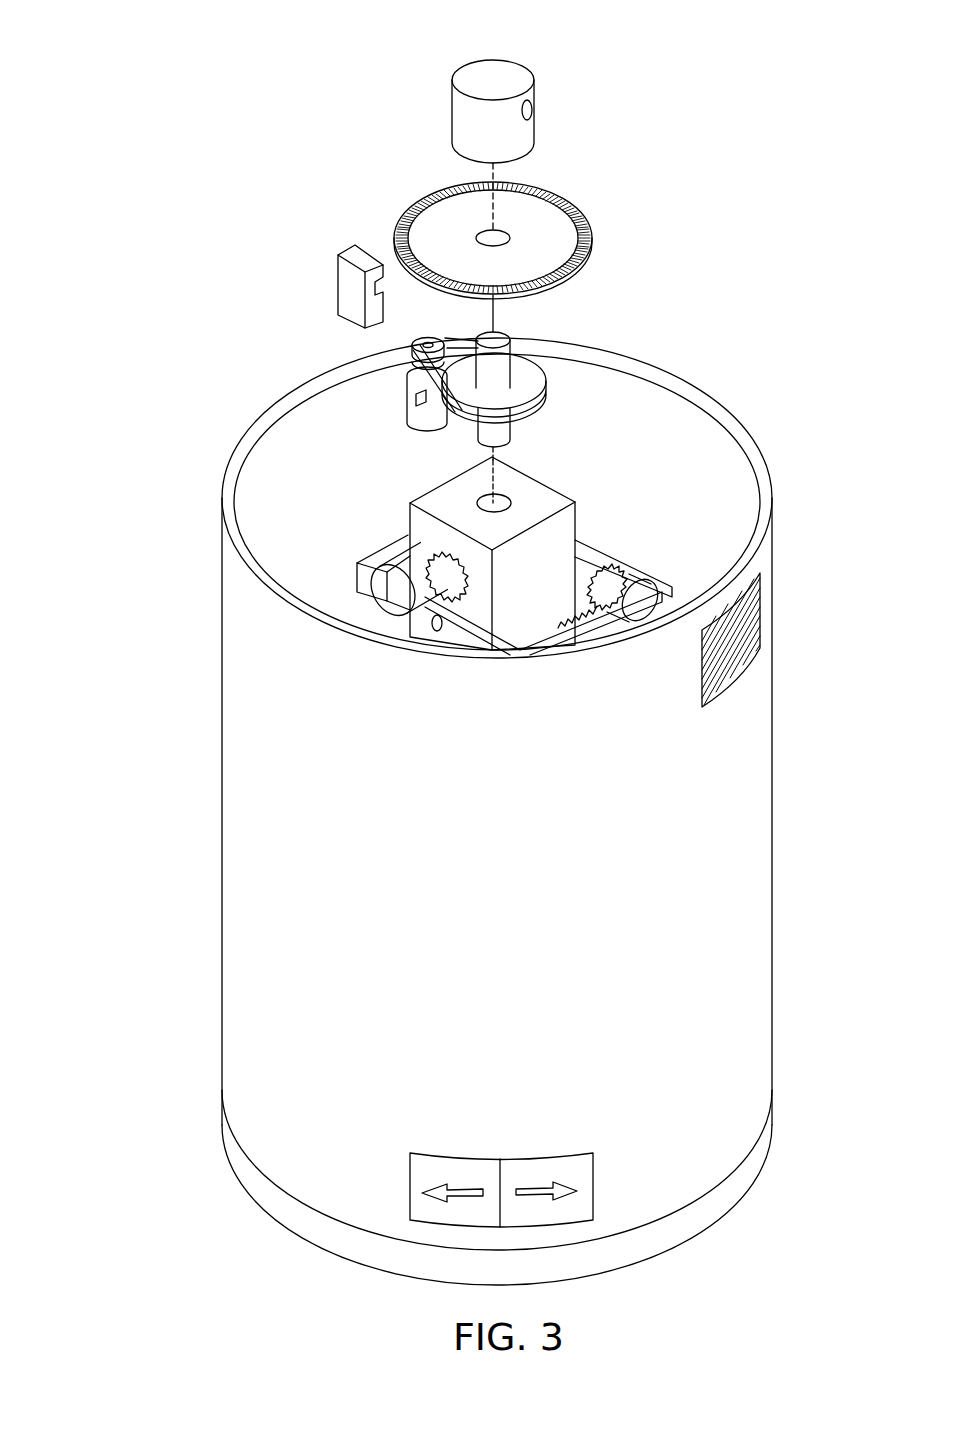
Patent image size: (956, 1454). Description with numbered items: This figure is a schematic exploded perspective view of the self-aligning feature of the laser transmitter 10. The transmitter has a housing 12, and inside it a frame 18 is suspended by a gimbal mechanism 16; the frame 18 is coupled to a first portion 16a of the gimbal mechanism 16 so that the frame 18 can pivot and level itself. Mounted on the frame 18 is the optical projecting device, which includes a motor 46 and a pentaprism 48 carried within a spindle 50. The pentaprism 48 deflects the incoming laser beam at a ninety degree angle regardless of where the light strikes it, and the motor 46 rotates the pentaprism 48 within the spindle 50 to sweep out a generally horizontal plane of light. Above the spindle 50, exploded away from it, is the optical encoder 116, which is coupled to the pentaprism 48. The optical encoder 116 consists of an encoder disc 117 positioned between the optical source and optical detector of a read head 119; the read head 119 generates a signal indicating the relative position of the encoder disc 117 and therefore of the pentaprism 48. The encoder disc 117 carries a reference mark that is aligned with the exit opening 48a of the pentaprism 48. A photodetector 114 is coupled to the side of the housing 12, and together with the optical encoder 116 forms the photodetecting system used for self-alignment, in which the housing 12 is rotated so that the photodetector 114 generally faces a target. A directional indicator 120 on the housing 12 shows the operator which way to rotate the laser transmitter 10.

The laser transmitter 10 is at (176, 733).
The housing 12 is at (230, 633).
The gimbal mechanism 16 is at (660, 554).
The first portion 16a is at (377, 560).
The frame 18 is at (563, 533).
The motor 46 is at (420, 417).
The pentaprism 48 is at (505, 72).
The exit opening 48a is at (532, 110).
The spindle 50 is at (503, 357).
The photodetector 114 is at (748, 638).
The optical encoder 116 is at (370, 226).
The encoder disc 117 is at (535, 207).
The read head 119 is at (348, 302).
The directional indicator 120 is at (583, 1162).